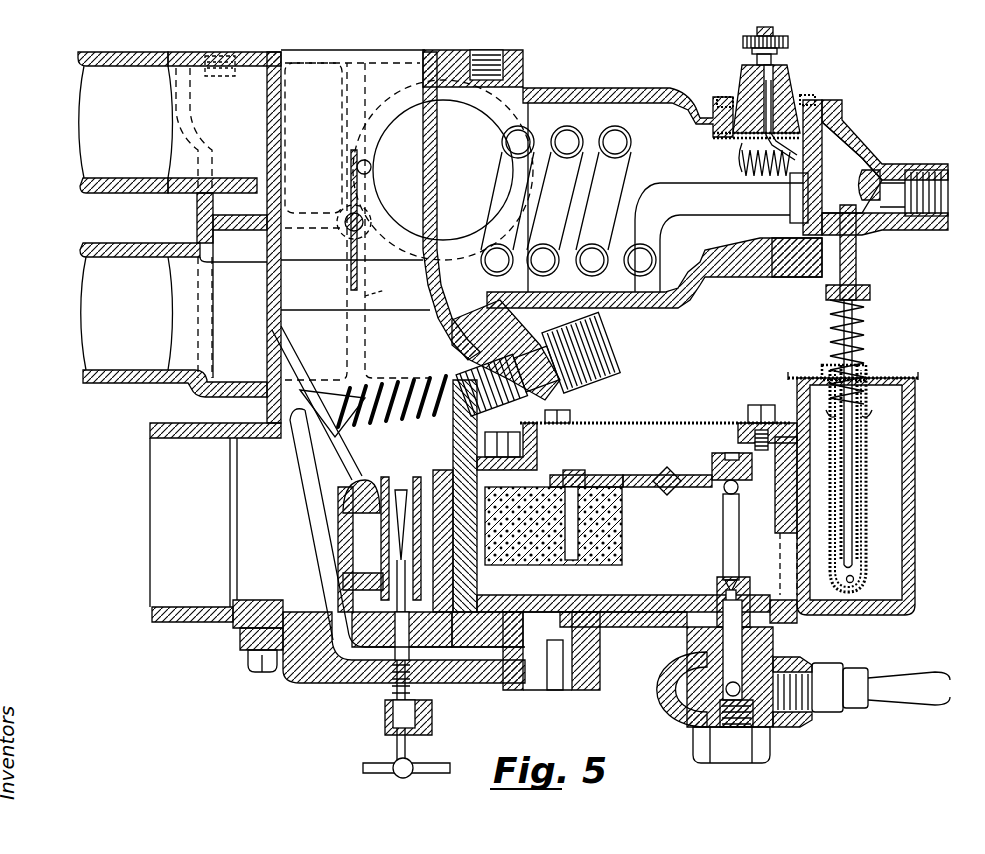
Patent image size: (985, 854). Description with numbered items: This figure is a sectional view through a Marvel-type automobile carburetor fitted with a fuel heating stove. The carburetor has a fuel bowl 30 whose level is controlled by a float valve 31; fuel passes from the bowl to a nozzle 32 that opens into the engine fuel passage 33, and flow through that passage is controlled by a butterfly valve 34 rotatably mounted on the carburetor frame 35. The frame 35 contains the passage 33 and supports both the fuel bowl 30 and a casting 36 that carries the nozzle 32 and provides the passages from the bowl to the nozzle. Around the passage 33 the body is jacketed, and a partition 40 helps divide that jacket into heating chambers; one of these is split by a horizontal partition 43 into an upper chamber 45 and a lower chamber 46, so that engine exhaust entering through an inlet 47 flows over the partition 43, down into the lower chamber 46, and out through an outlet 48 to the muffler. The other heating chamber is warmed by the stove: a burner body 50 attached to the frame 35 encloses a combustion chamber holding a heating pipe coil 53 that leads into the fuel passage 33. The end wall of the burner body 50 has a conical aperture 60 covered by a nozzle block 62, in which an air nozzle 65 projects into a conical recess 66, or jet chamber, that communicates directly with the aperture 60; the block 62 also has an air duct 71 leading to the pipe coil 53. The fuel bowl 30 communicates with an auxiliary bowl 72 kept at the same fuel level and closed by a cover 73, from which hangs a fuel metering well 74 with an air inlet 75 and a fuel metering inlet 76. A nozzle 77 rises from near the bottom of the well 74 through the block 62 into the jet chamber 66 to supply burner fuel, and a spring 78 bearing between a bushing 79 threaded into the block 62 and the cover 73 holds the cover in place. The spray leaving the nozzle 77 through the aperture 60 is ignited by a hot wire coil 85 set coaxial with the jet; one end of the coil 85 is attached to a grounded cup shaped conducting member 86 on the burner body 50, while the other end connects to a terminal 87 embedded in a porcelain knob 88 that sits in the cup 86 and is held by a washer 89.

The fuel bowl 30 is at (630, 442).
The float valve 31 is at (728, 533).
The nozzle 32 is at (404, 500).
The engine fuel passage 33 is at (263, 500).
The butterfly valve 34 is at (350, 157).
The carburetor frame 35 is at (200, 215).
The casting 36 is at (337, 690).
The partition 40 is at (389, 286).
The horizontal partition 43 is at (245, 229).
The upper chamber 45 is at (237, 115).
The lower chamber 46 is at (240, 301).
The inlet 47 is at (120, 142).
The outlet 48 is at (117, 332).
The burner body 50 is at (625, 88).
The heating pipe coil 53 is at (572, 201).
The conical aperture 60 is at (787, 240).
The nozzle block 62 is at (838, 134).
The air nozzle 65 is at (845, 182).
The conical recess 66 is at (864, 163).
The air duct 71 is at (836, 381).
The auxiliary bowl 72 is at (885, 448).
The cover 73 is at (817, 373).
The fuel metering well 74 is at (868, 432).
The air inlet 75 is at (826, 414).
The fuel metering inlet 76 is at (854, 580).
The nozzle 77 is at (862, 363).
The spring 78 is at (866, 322).
The bushing 79 is at (870, 283).
The hot wire coil 85 is at (760, 178).
The cup shaped conducting member 86 is at (742, 140).
The terminal 87 is at (788, 45).
The porcelain knob 88 is at (773, 90).
The washer 89 is at (808, 97).